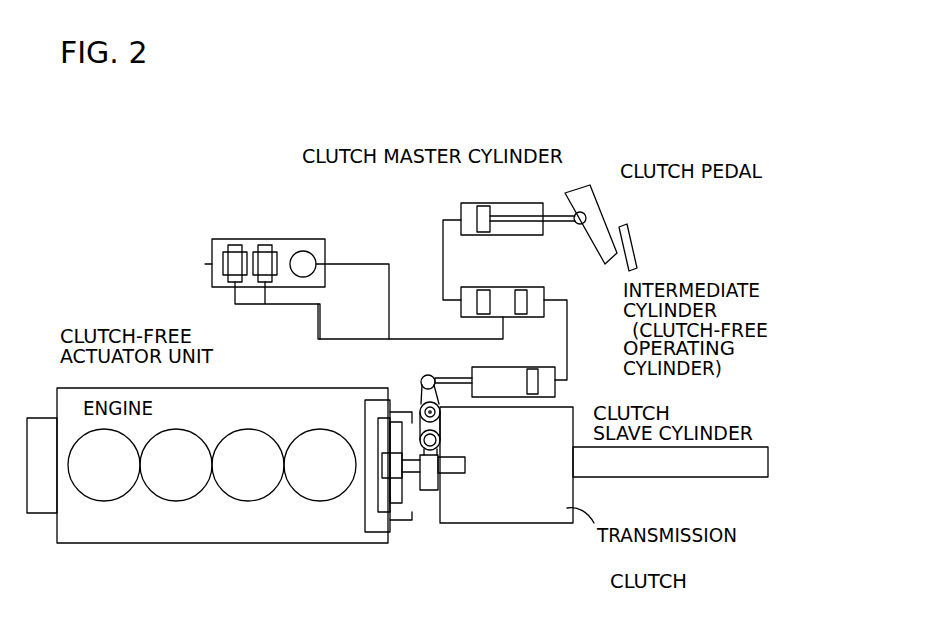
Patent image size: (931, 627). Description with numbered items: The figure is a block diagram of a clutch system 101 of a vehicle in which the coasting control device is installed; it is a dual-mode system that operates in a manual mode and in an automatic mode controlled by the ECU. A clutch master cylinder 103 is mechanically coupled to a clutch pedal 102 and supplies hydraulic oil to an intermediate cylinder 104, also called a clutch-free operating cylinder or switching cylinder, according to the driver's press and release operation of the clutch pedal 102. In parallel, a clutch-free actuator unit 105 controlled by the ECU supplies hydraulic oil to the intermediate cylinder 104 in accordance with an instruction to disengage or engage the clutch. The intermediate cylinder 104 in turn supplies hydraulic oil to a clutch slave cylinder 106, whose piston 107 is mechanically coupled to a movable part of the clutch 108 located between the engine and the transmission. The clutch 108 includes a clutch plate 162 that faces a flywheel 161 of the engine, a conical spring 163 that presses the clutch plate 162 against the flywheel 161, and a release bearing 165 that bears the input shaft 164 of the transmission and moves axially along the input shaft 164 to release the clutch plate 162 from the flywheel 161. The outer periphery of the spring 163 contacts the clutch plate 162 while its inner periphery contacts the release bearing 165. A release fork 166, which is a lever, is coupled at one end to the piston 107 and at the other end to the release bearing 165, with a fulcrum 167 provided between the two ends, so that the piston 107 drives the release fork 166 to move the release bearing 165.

The clutch system 101 is at (162, 185).
The clutch pedal 102 is at (638, 251).
The clutch master cylinder 103 is at (487, 203).
The intermediate cylinder 104 is at (528, 288).
The clutch-free actuator unit 105 is at (212, 264).
The clutch slave cylinder 106 is at (530, 366).
The piston 107 is at (453, 375).
The clutch 108 is at (436, 472).
The flywheel 161 is at (365, 495).
The clutch plate 162 is at (391, 495).
The spring 163 is at (418, 483).
The input shaft 164 is at (457, 483).
The release bearing 165 is at (430, 492).
The release fork 166 is at (421, 382).
The fulcrum 167 is at (421, 410).